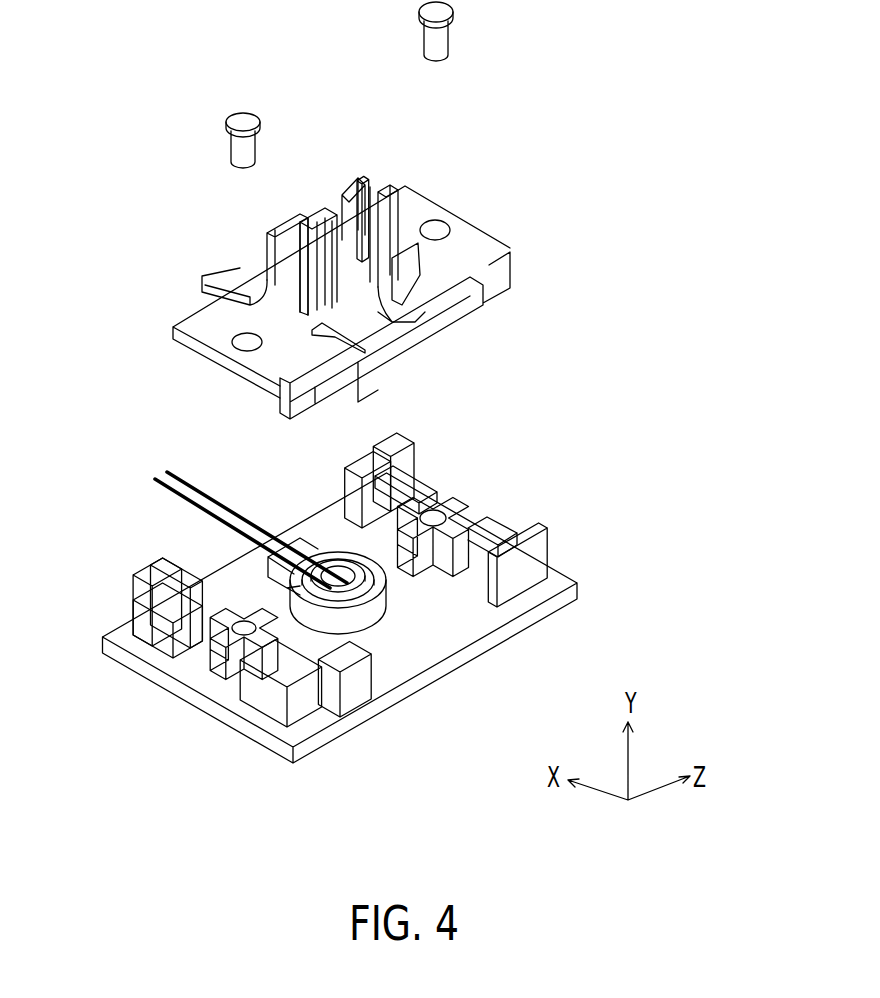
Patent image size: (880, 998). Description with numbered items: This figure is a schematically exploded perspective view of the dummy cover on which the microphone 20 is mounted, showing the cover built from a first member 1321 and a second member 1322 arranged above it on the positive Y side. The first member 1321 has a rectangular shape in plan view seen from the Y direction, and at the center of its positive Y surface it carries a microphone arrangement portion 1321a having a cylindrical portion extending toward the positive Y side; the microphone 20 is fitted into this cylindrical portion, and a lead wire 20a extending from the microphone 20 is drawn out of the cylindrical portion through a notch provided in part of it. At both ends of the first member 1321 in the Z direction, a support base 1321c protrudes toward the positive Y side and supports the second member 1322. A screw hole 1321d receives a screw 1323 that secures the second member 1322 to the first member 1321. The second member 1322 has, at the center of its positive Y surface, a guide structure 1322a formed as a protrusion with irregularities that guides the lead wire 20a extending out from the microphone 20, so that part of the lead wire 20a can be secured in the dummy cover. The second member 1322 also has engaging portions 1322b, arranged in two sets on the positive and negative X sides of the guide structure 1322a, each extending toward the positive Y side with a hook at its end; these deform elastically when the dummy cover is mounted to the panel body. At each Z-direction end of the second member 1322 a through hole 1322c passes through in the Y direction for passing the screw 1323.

The microphone 20 is at (340, 562).
The lead wire 20a is at (176, 493).
The first member 1321 is at (567, 597).
The microphone arrangement portion 1321a is at (383, 610).
The support base 1321c is at (147, 620).
The screw hole 1321d is at (433, 515).
The second member 1322 is at (512, 266).
The guide structure 1322a is at (374, 190).
The engaging portion 1322b is at (323, 202).
The through hole 1322c is at (235, 344).
The screw 1323 is at (253, 122).